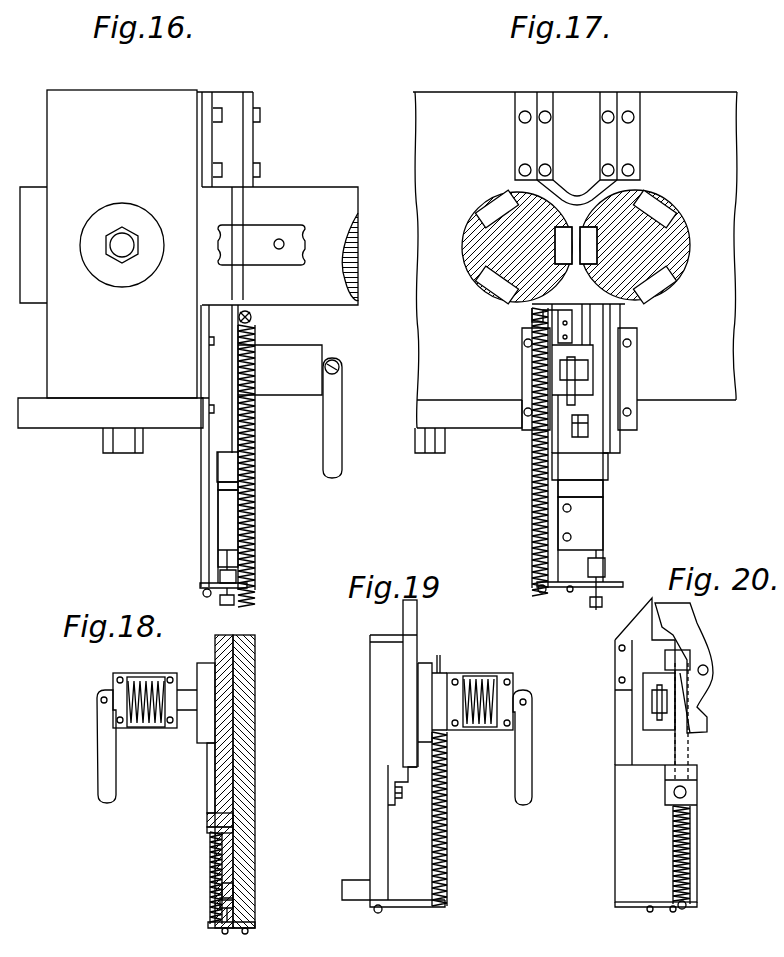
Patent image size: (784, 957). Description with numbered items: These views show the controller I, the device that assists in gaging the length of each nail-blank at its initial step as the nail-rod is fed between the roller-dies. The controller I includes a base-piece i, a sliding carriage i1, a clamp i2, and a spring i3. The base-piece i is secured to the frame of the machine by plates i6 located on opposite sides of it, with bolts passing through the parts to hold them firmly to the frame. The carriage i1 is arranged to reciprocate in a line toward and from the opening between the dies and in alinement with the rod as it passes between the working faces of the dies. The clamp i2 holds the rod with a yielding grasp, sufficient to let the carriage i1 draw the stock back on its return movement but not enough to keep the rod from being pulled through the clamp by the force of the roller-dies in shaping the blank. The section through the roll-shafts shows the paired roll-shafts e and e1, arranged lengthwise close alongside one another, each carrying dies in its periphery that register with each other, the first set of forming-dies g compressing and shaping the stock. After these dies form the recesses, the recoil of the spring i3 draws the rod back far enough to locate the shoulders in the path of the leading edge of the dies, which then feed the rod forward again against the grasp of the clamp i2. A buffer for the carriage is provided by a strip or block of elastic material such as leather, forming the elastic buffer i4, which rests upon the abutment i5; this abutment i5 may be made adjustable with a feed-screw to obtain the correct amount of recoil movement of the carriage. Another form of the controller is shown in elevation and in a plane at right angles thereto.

In FIG. 17, the roll-shaft e is at (677, 223).
In FIG. 16, the roll-shaft e1 is at (323, 187).
In FIG. 17, the roll-shaft e1 is at (472, 217).
In FIG. 16, the roller-dies g is at (261, 205).
In FIG. 17, the roller-dies g is at (576, 263).
In FIG. 16, the controller I is at (253, 548).
In FIG. 17, the controller I is at (604, 448).
In FIG. 18, the controller I is at (249, 828).
In FIG. 16, the base-piece i is at (207, 462).
In FIG. 17, the base-piece i is at (615, 470).
In FIG. 18, the base-piece i is at (253, 673).
In FIG. 16, the sliding carriage i1 is at (230, 468).
In FIG. 17, the sliding carriage i1 is at (593, 470).
In FIG. 18, the sliding carriage i1 is at (225, 760).
In FIG. 18, the clamp i2 is at (200, 670).
In FIG. 16, the spring i3 is at (247, 513).
In FIG. 17, the spring i3 is at (535, 500).
In FIG. 18, the spring i3 is at (213, 860).
In FIG. 16, the elastic buffer i4 is at (227, 483).
In FIG. 17, the elastic buffer i4 is at (593, 485).
In FIG. 18, the elastic buffer i4 is at (212, 817).
In FIG. 16, the abutment i5 is at (227, 516).
In FIG. 17, the abutment i5 is at (588, 530).
In FIG. 18, the abutment i5 is at (213, 828).
In FIG. 17, the plates i6 is at (518, 352).